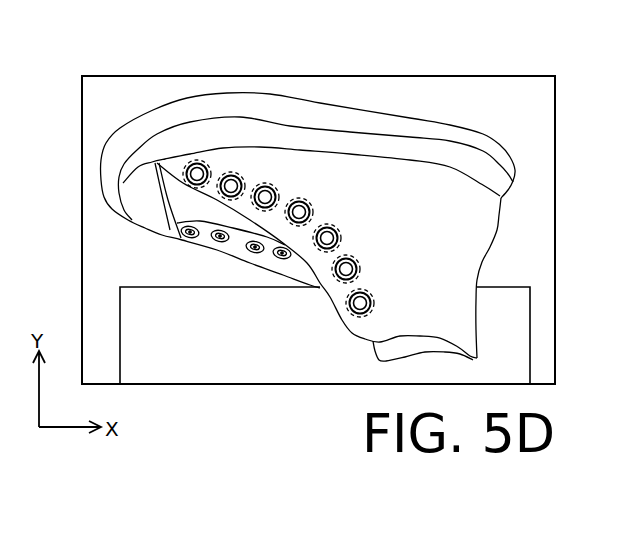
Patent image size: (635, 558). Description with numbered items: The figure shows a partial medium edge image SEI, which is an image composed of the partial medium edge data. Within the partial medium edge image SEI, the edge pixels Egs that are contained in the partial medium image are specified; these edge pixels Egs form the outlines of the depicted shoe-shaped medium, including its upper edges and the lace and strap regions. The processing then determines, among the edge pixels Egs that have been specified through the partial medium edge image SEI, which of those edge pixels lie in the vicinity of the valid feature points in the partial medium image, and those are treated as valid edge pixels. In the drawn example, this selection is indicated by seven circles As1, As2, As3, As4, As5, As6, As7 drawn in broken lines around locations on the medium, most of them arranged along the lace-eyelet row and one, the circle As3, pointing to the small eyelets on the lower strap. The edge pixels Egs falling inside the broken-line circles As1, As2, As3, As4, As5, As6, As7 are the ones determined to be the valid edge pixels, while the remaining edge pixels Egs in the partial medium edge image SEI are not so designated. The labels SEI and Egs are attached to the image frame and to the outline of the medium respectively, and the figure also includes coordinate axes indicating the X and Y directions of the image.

The broken-line circle As1 is at (183, 177).
The broken-line circle As2 is at (217, 191).
The broken-line circle As3 is at (214, 237).
The broken-line circle As4 is at (312, 203).
The broken-line circle As5 is at (339, 229).
The broken-line circle As6 is at (361, 266).
The broken-line circle As7 is at (375, 303).
The partial medium edge image SEI is at (484, 76).
The edge pixels Egs is at (500, 145).